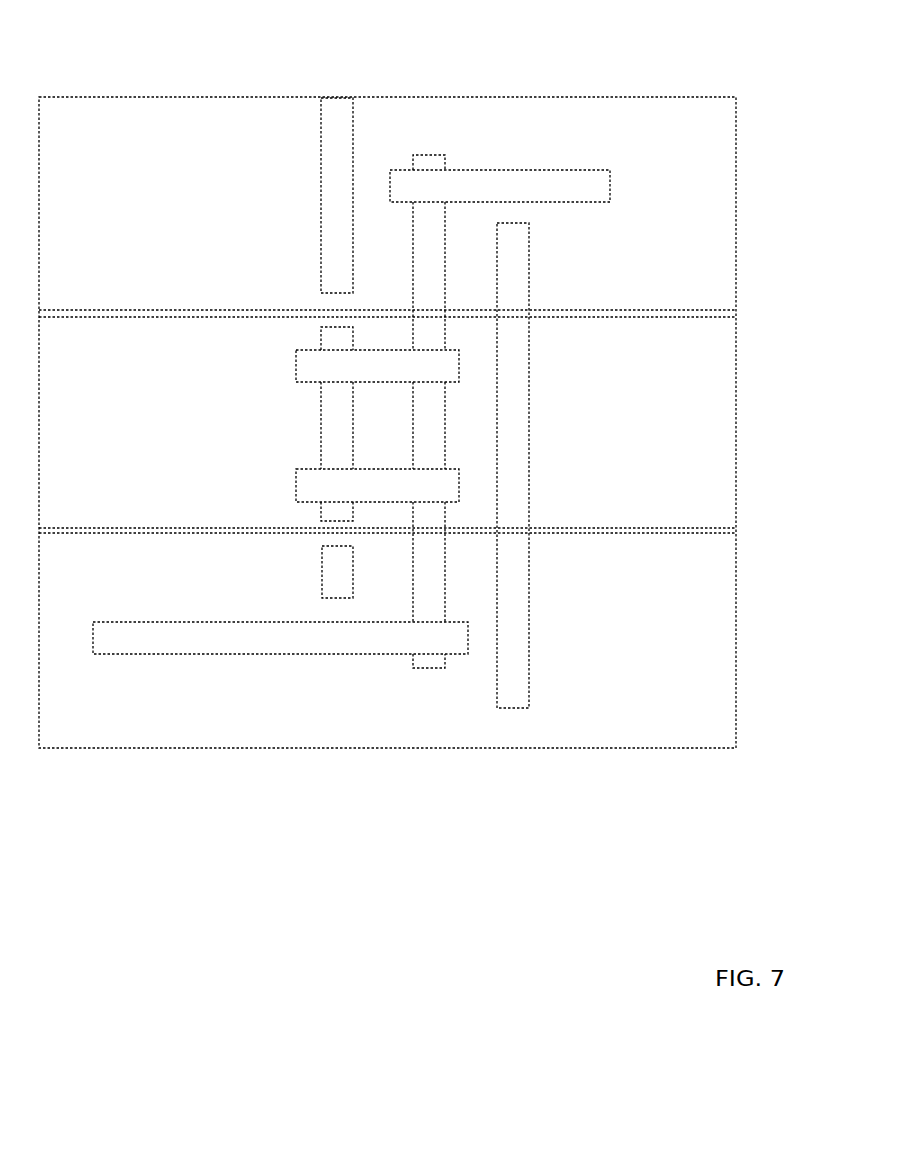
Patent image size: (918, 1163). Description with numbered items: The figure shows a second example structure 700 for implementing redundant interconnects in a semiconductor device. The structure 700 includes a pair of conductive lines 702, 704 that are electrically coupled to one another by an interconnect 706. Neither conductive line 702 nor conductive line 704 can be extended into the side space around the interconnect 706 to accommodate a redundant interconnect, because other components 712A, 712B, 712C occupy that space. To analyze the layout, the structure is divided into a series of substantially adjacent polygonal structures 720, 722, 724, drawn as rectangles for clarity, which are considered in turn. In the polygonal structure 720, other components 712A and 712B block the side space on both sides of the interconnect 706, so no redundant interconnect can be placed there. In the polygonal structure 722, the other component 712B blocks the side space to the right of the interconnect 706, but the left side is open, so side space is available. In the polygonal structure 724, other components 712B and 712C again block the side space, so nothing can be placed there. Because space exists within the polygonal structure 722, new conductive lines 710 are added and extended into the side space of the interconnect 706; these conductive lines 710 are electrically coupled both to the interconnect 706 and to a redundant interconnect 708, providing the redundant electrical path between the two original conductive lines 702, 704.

The example structure 700 is at (165, 60).
The conductive line 702 is at (580, 170).
The conductive line 704 is at (185, 655).
The interconnect 706 is at (429, 668).
The redundant interconnect 708 is at (321, 425).
The conductive lines 710 is at (296, 365).
The other component 712A is at (321, 196).
The other component 712B is at (529, 582).
The other component 712C is at (321, 573).
The polygonal structure 720 is at (731, 218).
The polygonal structure 722 is at (733, 428).
The polygonal structure 724 is at (729, 650).